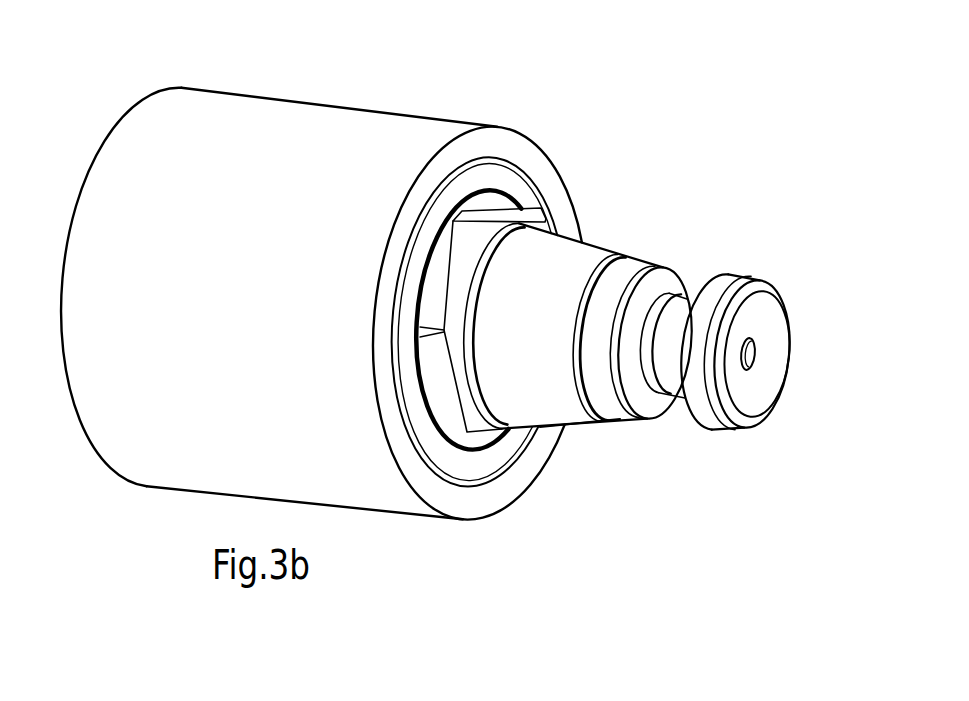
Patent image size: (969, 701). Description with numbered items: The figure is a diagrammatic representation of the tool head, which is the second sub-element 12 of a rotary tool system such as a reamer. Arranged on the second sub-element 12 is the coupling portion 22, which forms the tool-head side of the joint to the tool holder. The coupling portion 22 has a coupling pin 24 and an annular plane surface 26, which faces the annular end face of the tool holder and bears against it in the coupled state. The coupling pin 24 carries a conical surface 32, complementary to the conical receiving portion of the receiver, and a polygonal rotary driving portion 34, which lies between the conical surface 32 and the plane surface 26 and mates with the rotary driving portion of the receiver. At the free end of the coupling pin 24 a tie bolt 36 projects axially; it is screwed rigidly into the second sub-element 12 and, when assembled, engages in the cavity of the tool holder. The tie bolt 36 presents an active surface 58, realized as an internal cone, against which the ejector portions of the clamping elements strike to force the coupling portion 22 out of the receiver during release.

The second sub-element 12 is at (310, 102).
The coupling portion 22 is at (597, 245).
The coupling pin 24 is at (562, 266).
The annular plane surface 26 is at (498, 177).
The conical surface 32 is at (568, 410).
The polygonal rotary driving portion 34 is at (467, 237).
The tie bolt 36 is at (718, 290).
The active surface 58 is at (765, 322).